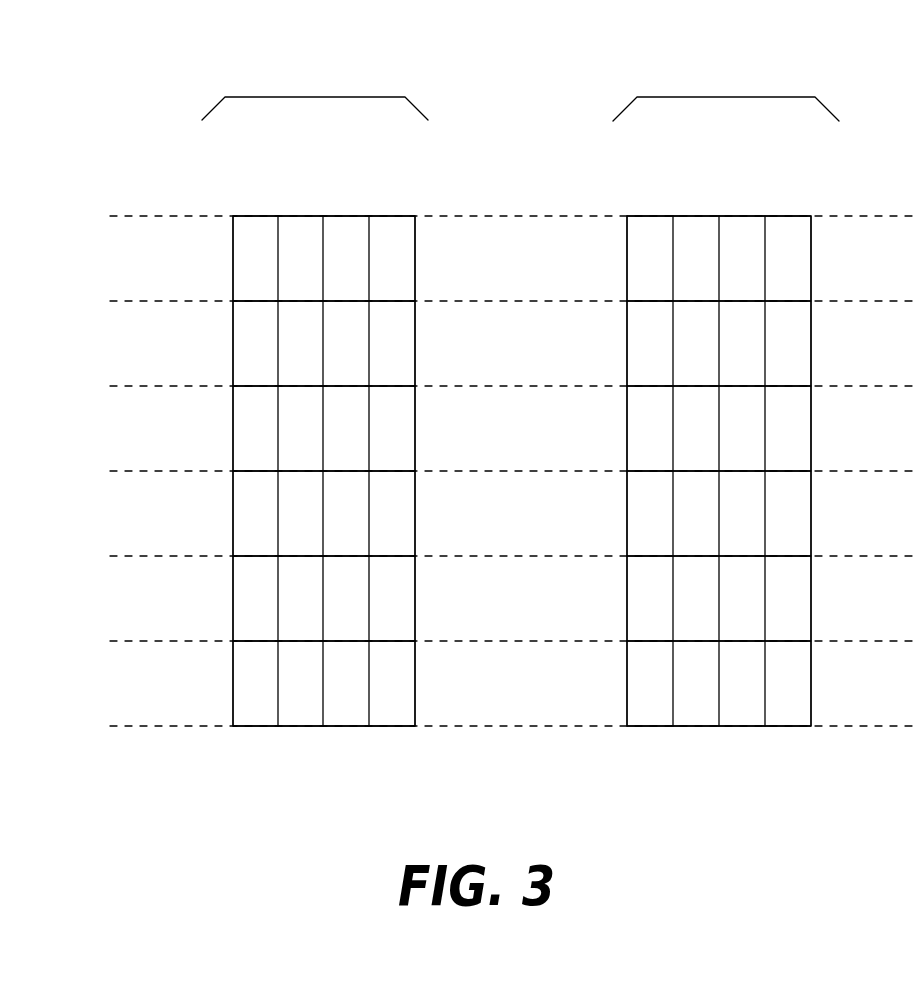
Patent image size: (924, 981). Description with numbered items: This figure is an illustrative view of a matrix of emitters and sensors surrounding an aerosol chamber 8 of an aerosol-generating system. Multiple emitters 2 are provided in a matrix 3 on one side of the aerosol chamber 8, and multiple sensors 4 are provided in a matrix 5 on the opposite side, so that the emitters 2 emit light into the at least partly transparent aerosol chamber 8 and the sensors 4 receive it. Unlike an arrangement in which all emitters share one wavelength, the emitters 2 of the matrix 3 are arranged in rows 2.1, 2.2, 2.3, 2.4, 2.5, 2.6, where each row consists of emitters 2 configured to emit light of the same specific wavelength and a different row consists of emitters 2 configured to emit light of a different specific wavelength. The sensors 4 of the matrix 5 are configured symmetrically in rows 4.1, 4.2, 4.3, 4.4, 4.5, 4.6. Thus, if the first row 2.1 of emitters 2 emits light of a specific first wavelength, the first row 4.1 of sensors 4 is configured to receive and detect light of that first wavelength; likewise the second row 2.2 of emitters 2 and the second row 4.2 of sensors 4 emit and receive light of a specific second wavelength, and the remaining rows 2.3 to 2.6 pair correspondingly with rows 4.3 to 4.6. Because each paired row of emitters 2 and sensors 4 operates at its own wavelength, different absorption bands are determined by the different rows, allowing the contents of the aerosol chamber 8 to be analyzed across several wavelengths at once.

The emitters 2 is at (283, 428).
The first row of emitters 2.1 is at (283, 258).
The second row of emitters 2.2 is at (283, 343).
The third row of emitters 2.3 is at (283, 428).
The fourth row of emitters 2.4 is at (283, 513).
The fifth row of emitters 2.5 is at (283, 598).
The sixth row of emitters 2.6 is at (283, 683).
The matrix of emitters 3 is at (337, 97).
The sensors 4 is at (759, 430).
The first row of sensors 4.1 is at (759, 258).
The second row of sensors 4.2 is at (759, 343).
The third row of sensors 4.3 is at (759, 428).
The fourth row of sensors 4.4 is at (759, 513).
The fifth row of sensors 4.5 is at (759, 598).
The sixth row of sensors 4.6 is at (759, 683).
The matrix of sensors 5 is at (746, 97).
The aerosol chamber 8 is at (501, 205).